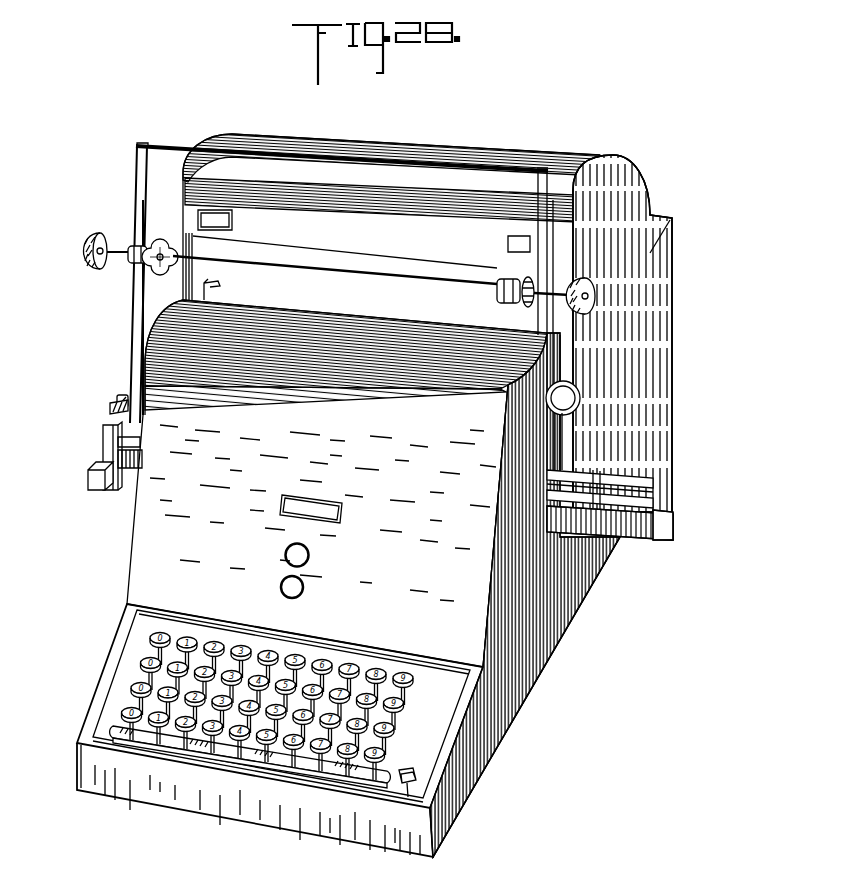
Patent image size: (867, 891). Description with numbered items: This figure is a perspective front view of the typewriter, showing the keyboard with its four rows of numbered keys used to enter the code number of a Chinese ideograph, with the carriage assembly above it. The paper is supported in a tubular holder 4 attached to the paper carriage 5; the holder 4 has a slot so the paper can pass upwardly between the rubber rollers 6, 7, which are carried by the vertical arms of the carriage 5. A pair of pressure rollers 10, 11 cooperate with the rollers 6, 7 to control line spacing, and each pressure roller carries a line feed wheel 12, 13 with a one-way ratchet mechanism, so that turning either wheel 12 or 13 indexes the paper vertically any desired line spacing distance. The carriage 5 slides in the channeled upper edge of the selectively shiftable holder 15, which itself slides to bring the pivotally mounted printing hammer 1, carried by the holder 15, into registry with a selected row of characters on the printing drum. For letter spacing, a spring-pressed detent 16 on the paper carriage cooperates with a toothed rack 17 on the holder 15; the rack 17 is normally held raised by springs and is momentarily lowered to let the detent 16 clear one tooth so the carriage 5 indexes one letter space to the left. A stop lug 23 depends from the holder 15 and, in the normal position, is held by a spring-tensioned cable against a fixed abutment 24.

The printing hammer 1 is at (219, 283).
The tubular holder 4 is at (568, 407).
The paper carriage 5 is at (130, 200).
The rubber roller 6 is at (160, 240).
The rubber roller 7 is at (520, 278).
The pressure roller 10 is at (140, 264).
The pressure roller 11 is at (507, 302).
The line feed wheel 12 is at (84, 250).
The line feed wheel 13 is at (590, 298).
The selectively shiftable holder 15 is at (659, 488).
The spring-pressed detent 16 is at (122, 398).
The toothed rack 17 is at (110, 404).
The stop lug 23 is at (115, 487).
The fixed abutment 24 is at (88, 477).